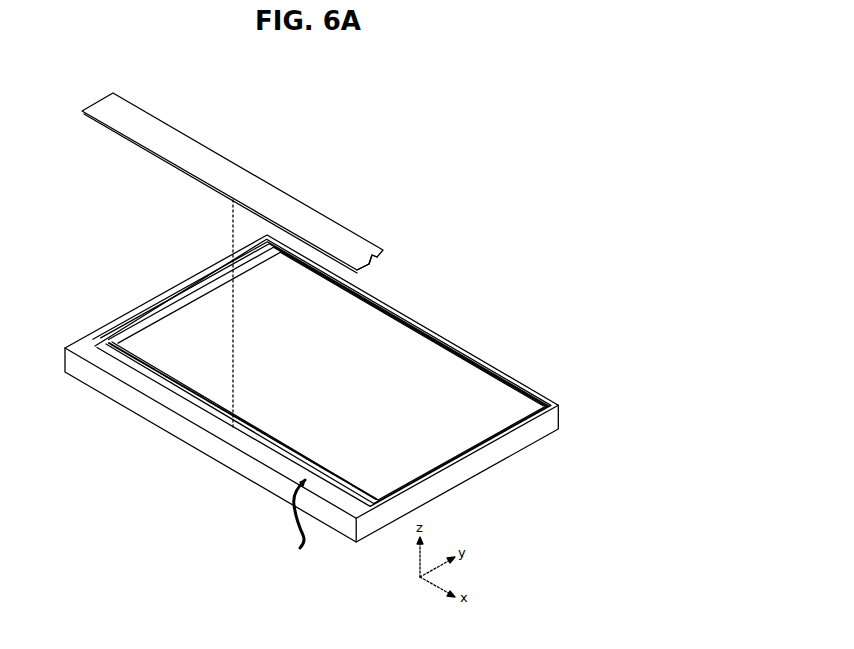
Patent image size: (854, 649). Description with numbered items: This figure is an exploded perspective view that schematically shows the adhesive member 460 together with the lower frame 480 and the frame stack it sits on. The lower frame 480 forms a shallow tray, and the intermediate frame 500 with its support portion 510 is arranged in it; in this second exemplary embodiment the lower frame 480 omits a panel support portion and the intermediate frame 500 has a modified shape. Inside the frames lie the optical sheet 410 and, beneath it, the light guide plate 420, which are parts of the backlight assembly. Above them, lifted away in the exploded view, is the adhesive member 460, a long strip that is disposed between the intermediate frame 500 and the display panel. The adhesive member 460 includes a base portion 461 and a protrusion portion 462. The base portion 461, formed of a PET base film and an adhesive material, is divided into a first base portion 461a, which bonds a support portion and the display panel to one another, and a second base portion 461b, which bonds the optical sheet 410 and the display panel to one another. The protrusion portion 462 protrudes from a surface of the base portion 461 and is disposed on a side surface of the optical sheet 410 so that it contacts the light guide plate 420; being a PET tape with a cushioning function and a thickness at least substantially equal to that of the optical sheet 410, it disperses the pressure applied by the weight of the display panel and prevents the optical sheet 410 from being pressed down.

The optical sheet 410 is at (213, 298).
The light guide plate 420 is at (175, 388).
The adhesive member 460 is at (488, 238).
The base portion 461 is at (449, 252).
The first base portion 461a is at (360, 272).
The second base portion 461b is at (372, 261).
The protrusion portion 462 is at (378, 243).
The lower frame 480 is at (465, 470).
The intermediate frame 500 is at (146, 314).
The support portion 510 is at (299, 527).